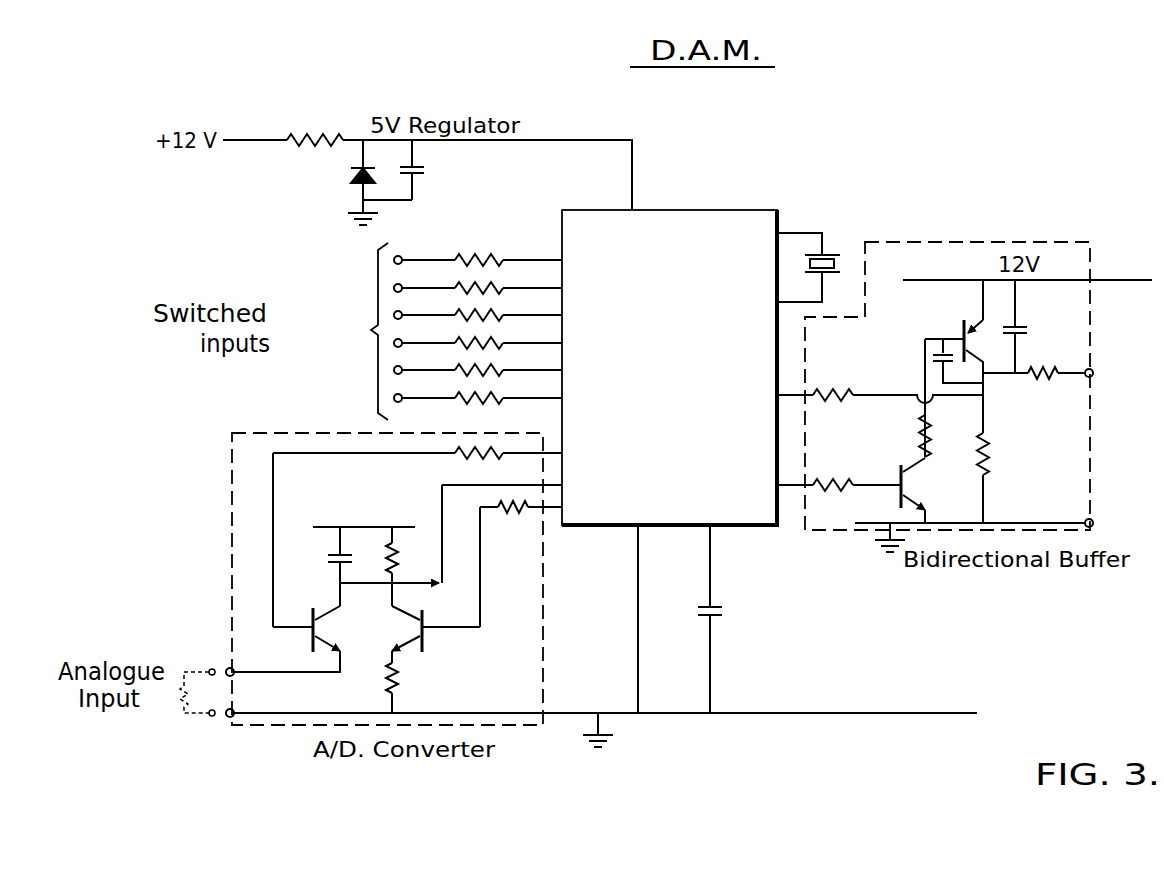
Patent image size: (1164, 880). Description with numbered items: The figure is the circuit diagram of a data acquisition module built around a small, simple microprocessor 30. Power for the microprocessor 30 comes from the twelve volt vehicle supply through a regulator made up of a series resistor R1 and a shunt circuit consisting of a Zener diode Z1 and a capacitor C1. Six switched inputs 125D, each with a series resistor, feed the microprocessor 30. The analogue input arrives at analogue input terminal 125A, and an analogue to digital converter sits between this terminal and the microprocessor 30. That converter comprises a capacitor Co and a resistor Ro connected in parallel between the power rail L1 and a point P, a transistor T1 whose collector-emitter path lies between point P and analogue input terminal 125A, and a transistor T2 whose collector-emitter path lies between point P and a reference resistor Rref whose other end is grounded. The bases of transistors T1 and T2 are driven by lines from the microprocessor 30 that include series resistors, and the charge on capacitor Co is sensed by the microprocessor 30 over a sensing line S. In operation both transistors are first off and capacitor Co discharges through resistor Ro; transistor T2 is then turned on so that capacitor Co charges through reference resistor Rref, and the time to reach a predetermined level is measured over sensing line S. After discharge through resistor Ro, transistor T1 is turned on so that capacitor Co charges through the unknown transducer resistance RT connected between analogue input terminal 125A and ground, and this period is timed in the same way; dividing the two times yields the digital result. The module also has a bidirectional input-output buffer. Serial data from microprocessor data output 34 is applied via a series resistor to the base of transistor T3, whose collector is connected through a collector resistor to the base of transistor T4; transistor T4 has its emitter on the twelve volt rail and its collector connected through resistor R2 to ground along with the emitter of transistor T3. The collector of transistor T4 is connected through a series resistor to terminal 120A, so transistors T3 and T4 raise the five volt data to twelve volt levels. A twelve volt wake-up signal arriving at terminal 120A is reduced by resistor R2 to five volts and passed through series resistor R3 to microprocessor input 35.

The microprocessor 30 is at (697, 218).
The microprocessor data output 34 is at (779, 483).
The microprocessor input 35 is at (779, 393).
The terminal 120A is at (1090, 367).
The analogue input terminal 125A is at (229, 666).
The switched inputs 125D is at (430, 285).
The series resistor R1 is at (300, 133).
The Zener diode Z1 is at (348, 176).
The capacitor C1 is at (428, 170).
The resistor R2 is at (987, 456).
The series resistor R3 is at (842, 392).
The transistor T1 is at (327, 608).
The transistor T2 is at (434, 637).
The transistor T3 is at (912, 462).
The transistor T4 is at (973, 333).
The power rail L1 is at (355, 526).
The sensing line S is at (468, 483).
The point P is at (390, 588).
The resistor Ro is at (412, 548).
The capacitor Co is at (322, 566).
The reference resistor Rref is at (418, 688).
The unknown resistance of the transducer RT is at (178, 708).